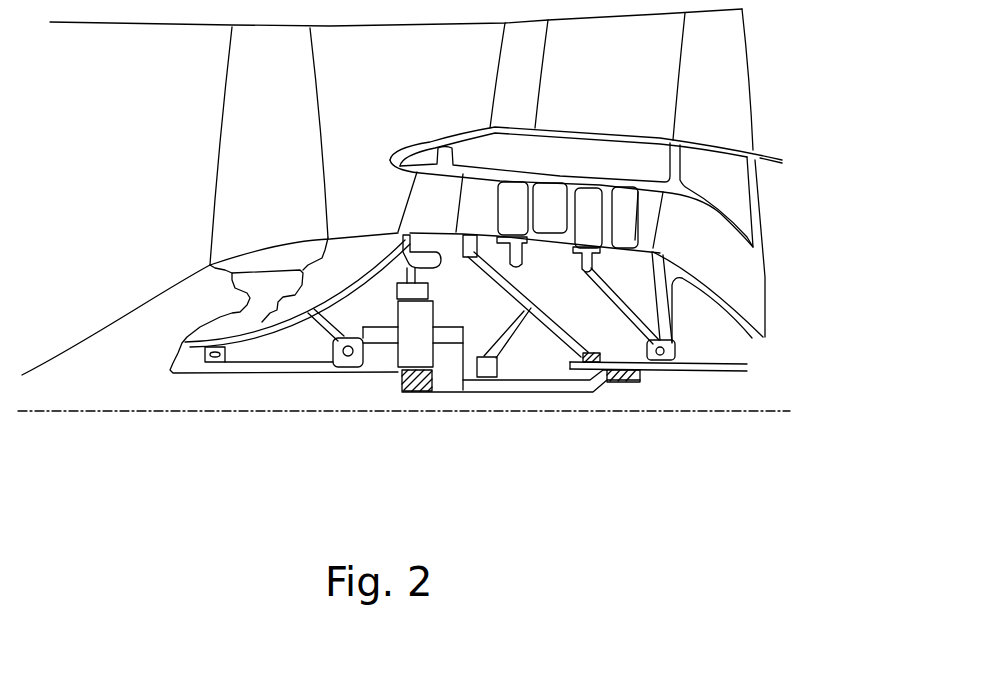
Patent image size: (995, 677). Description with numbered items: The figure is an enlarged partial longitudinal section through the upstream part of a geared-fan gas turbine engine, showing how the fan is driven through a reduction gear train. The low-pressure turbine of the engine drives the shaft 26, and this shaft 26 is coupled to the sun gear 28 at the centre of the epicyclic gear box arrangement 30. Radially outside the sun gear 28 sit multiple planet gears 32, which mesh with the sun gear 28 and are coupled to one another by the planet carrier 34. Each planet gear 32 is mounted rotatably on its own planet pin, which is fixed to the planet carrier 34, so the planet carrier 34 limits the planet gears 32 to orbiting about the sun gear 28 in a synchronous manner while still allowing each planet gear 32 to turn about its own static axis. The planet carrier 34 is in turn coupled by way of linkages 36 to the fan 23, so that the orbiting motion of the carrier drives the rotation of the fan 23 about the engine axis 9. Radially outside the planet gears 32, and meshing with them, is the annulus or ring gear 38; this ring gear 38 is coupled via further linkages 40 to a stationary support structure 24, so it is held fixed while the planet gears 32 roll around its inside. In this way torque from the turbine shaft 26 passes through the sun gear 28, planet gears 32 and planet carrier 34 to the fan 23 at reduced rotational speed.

The engine axis 9 is at (200, 413).
The fan 23 is at (234, 150).
The stationary support structure 24 is at (422, 198).
The shaft 26 is at (553, 395).
The sun gear 28 is at (415, 378).
The epicyclic gear box arrangement 30 is at (380, 393).
The planet gears 32 is at (397, 382).
The planet carrier 34 is at (450, 366).
The linkages 36 is at (365, 378).
The ring gear 38 is at (397, 292).
The linkages 40 is at (432, 268).